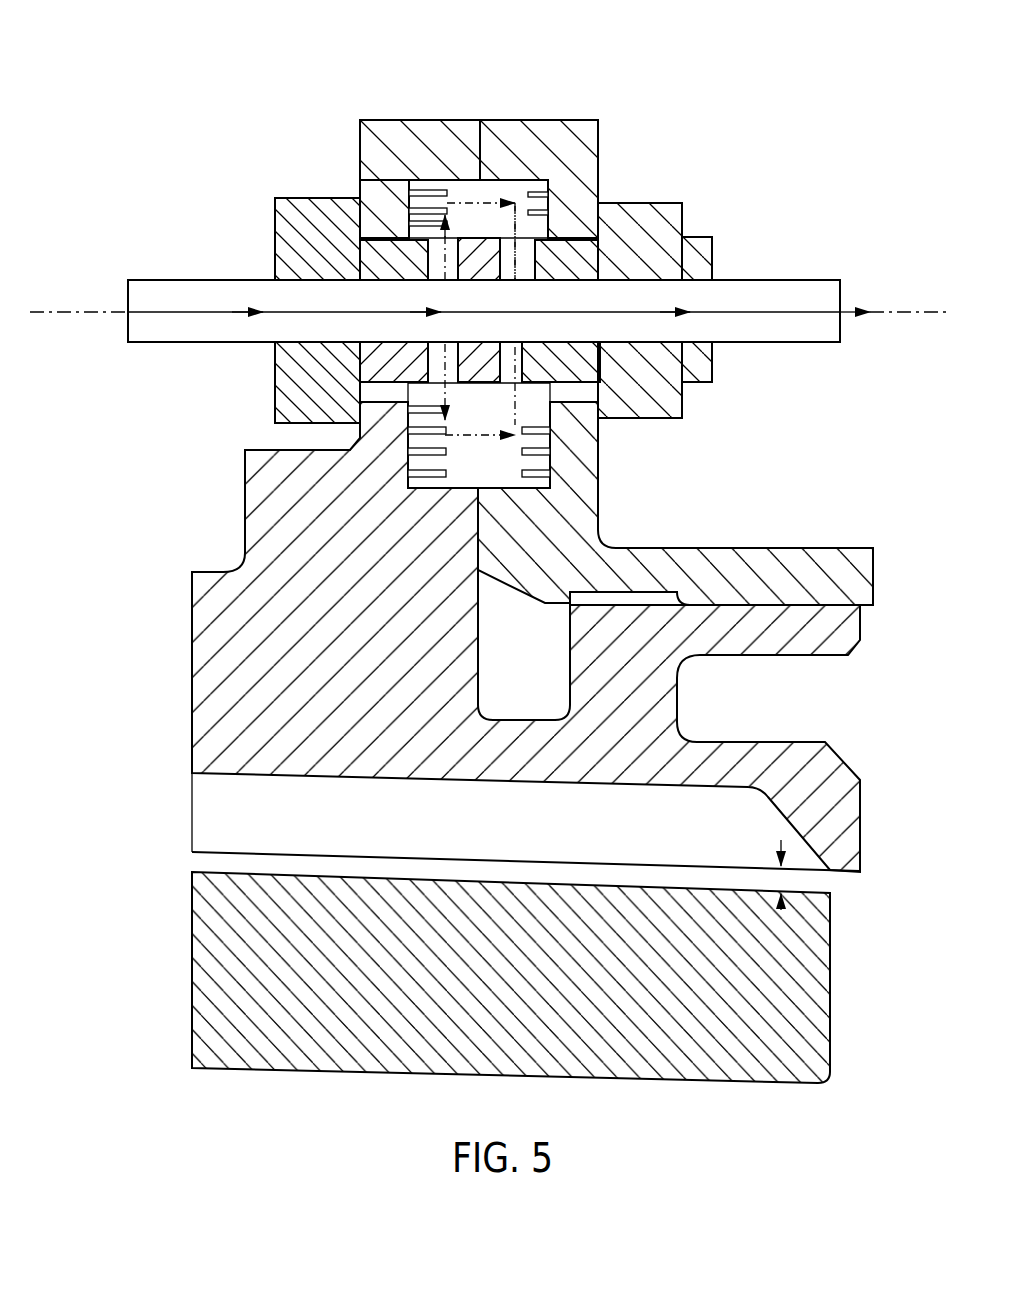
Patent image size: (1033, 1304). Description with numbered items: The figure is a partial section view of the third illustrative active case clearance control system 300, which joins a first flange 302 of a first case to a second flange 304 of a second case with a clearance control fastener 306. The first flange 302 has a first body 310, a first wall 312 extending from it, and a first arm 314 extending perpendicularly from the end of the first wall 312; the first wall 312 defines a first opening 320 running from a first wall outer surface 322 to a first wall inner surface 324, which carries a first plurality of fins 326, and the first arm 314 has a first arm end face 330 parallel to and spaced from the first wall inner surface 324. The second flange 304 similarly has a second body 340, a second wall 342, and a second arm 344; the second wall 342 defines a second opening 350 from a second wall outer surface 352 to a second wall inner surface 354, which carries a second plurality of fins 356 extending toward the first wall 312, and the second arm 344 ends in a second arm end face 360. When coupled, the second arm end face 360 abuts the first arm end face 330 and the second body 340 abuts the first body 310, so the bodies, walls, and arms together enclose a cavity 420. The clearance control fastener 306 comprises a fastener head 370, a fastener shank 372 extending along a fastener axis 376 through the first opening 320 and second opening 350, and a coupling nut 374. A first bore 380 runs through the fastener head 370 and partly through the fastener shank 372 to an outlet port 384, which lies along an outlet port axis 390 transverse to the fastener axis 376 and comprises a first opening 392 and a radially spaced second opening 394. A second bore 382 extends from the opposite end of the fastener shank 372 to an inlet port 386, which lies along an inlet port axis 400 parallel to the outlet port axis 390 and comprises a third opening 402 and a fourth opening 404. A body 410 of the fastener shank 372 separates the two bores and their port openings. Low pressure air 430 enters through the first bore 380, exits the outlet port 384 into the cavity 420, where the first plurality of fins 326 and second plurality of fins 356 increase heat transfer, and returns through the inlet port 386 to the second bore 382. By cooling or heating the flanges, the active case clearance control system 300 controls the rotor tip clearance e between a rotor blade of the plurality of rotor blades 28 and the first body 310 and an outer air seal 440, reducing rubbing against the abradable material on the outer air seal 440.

The plurality of rotor blades 28 is at (526, 988).
The active case clearance control system 300 is at (660, 88).
The first flange 302 is at (430, 88).
The second flange 304 is at (540, 78).
The clearance control fastener 306 is at (275, 160).
The first body 310 is at (205, 638).
The first wall 312 is at (378, 175).
The first arm 314 is at (438, 132).
The first opening 320 is at (380, 228).
The first wall outer surface 322 is at (358, 130).
The first wall inner surface 324 is at (417, 182).
The first plurality of fins 326 is at (455, 191).
The first arm end face 330 is at (472, 123).
The second body 340 is at (722, 556).
The second wall 342 is at (587, 207).
The second arm 344 is at (570, 132).
The second opening 350 is at (633, 203).
The second wall outer surface 352 is at (600, 138).
The second wall inner surface 354 is at (560, 200).
The second plurality of fins 356 is at (538, 170).
The second arm end face 360 is at (537, 122).
The fastener head 370 is at (273, 385).
The fastener shank 372 is at (697, 235).
The coupling nut 374 is at (652, 418).
The fastener axis 376 is at (905, 322).
The first bore 380 is at (300, 288).
The second bore 382 is at (650, 290).
The outlet port 384 is at (427, 262).
The inlet port 386 is at (535, 263).
The outlet port axis 390 is at (440, 283).
The first opening 392 is at (358, 232).
The second opening 394 is at (437, 380).
The inlet port axis 400 is at (530, 282).
The third opening 402 is at (585, 240).
The fourth opening 404 is at (522, 333).
The body 410 is at (496, 323).
The cavity 420 is at (508, 469).
The low pressure air 430 is at (212, 312).
The outer air seal 440 is at (208, 820).
The rotor tip clearance e is at (785, 878).